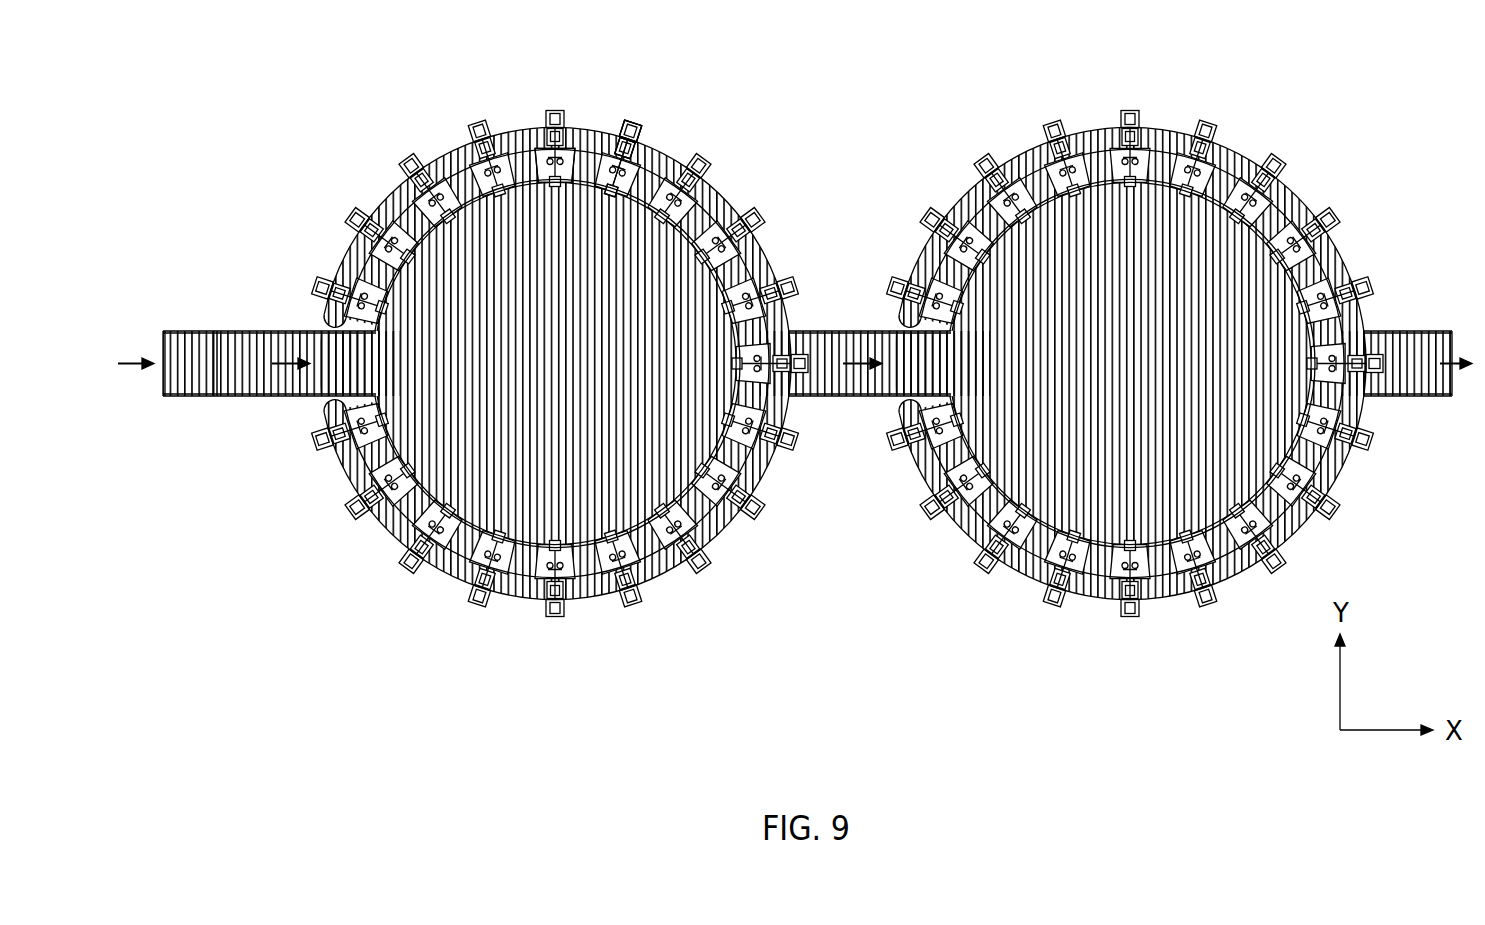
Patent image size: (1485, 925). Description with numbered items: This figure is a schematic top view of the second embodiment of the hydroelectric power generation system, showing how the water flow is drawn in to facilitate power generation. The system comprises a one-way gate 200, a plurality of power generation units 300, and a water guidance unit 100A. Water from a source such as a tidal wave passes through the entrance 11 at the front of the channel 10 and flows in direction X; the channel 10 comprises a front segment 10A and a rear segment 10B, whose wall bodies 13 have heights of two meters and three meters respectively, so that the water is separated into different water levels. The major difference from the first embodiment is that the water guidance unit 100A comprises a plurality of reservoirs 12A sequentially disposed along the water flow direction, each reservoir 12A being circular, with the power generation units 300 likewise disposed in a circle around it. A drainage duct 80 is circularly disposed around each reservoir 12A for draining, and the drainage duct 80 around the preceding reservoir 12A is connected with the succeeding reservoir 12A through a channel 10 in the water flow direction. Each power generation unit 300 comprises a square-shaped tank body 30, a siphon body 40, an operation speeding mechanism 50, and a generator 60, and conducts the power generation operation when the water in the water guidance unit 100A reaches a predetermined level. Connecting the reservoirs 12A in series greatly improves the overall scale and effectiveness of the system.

The water guidance unit 100A is at (592, 119).
The reservoir 12A is at (629, 234).
The wall bodies 13 is at (683, 233).
The entrance 11 is at (160, 348).
The one-way gate 200 is at (220, 344).
The front segment 10A is at (197, 375).
The rear segment 10B is at (260, 375).
The channel 10 is at (290, 495).
The drainage duct 80 is at (722, 519).
The tank body 30 is at (582, 566).
The siphon body 40 is at (604, 612).
The operation speeding mechanism 50 is at (636, 602).
The generator 60 is at (619, 598).
The power generation units 300 is at (640, 622).